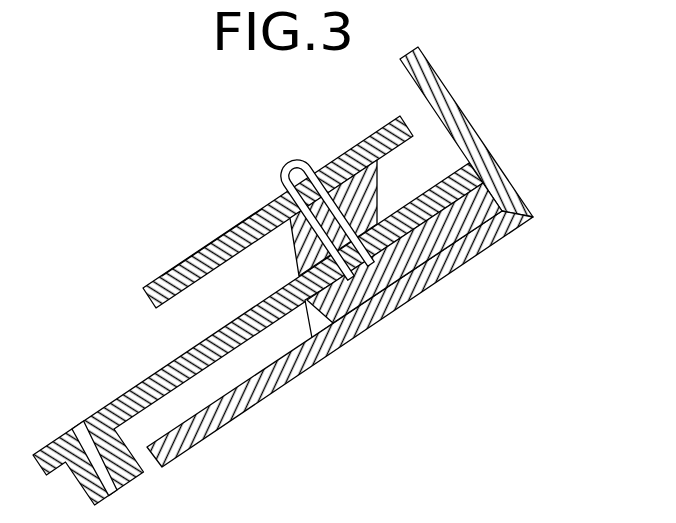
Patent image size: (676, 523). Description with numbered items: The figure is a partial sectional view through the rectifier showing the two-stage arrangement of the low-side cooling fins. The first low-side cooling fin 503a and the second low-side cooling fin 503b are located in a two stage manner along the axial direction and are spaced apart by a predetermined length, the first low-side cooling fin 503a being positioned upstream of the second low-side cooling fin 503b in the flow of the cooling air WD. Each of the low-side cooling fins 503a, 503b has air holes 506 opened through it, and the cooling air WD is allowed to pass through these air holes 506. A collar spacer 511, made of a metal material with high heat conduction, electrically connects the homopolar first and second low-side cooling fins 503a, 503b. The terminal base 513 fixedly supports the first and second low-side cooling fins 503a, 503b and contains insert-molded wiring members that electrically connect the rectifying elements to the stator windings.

The first low-side cooling fin 503a is at (262, 232).
The second low-side cooling fin 503b is at (113, 407).
The air holes 506 is at (183, 262).
The collar spacer 511 is at (300, 268).
The terminal base 513 is at (400, 307).
The cooling air WD is at (428, 180).